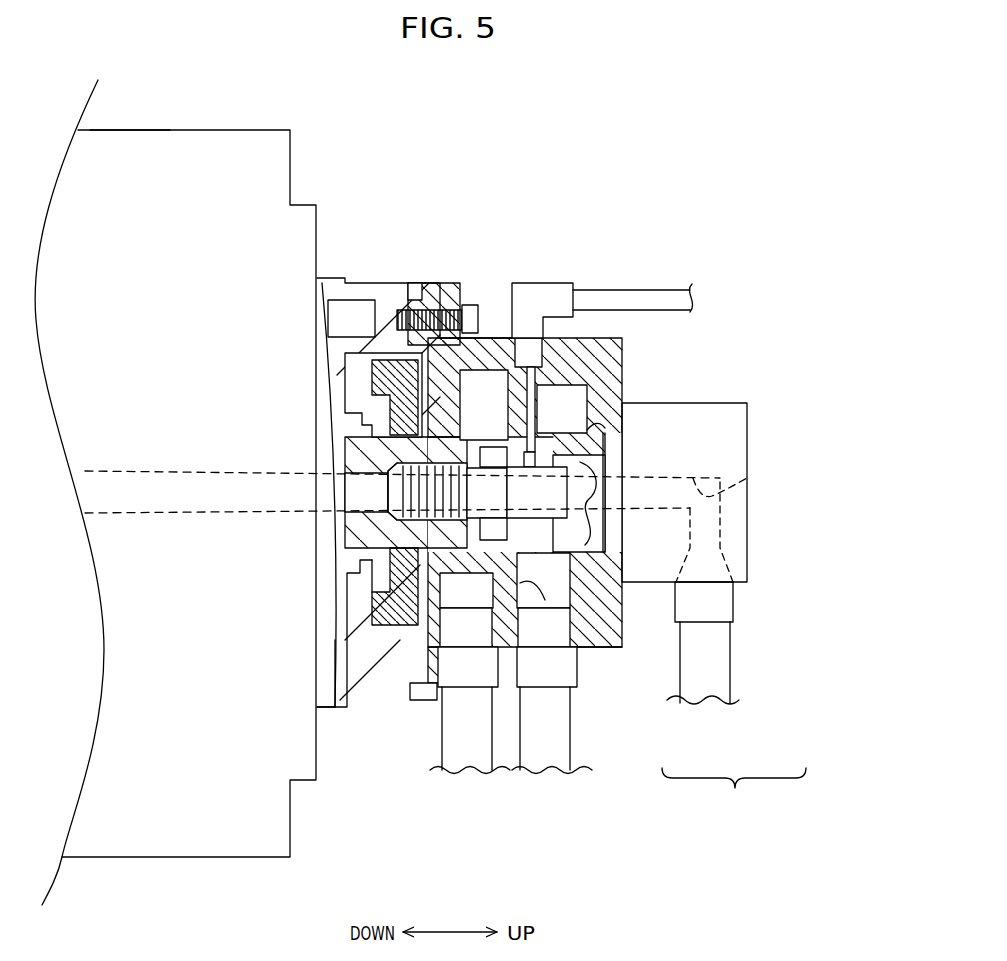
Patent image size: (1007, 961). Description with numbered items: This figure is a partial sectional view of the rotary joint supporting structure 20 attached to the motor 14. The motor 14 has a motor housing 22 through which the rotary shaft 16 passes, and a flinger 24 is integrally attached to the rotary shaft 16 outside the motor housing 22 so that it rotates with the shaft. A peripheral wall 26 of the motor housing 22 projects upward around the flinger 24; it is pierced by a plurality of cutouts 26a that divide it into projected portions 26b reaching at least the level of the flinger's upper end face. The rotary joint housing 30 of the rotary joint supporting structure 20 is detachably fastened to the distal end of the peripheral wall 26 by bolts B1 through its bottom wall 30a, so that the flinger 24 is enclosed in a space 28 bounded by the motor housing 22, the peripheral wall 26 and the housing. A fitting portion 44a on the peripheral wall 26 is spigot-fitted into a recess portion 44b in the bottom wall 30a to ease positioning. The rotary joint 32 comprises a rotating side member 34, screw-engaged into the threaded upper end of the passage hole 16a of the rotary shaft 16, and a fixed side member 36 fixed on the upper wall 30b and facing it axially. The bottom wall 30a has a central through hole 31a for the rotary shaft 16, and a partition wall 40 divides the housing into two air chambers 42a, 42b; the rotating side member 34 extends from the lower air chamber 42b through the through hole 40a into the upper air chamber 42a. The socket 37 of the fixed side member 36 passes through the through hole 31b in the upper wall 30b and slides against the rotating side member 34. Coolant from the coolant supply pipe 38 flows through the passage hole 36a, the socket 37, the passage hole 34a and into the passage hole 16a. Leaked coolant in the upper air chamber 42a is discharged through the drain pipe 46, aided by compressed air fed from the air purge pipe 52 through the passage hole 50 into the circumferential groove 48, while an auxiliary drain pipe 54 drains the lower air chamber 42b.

The motor 14 is at (192, 121).
The motor housing 22 is at (127, 150).
The rotary shaft 16 is at (344, 437).
The passage hole 16a is at (345, 488).
The rotary joint supporting structure 20 is at (610, 278).
The flinger 24 is at (383, 367).
The peripheral wall 26 is at (388, 268).
The cutouts 26a is at (380, 668).
The projected portions 26b is at (375, 282).
The space 28 is at (362, 382).
The rotary joint housing 30 is at (492, 334).
The bottom wall 30a is at (440, 290).
The upper wall 30b is at (627, 592).
The through hole 31a is at (462, 446).
The through hole 31b is at (605, 445).
The rotary joint 32 is at (734, 792).
The rotating side member 34 is at (460, 525).
The passage hole 34a is at (385, 492).
The fixed side member 36 is at (750, 590).
The passage hole 36a is at (747, 478).
The socket 37 is at (573, 428).
The coolant supply pipe 38 is at (705, 671).
The partition wall 40 is at (523, 583).
The through hole 40a is at (548, 445).
The air chamber 42a is at (570, 579).
The air chamber 42b is at (478, 592).
The fitting portion 44a is at (417, 292).
The recess portion 44b is at (425, 665).
The drain pipe 46 is at (550, 747).
The circumferential groove 48 is at (582, 523).
The passage hole 50 is at (527, 390).
The air purge pipe 52 is at (652, 290).
The auxiliary drain pipe 54 is at (467, 747).
The bolts B1 is at (484, 334).